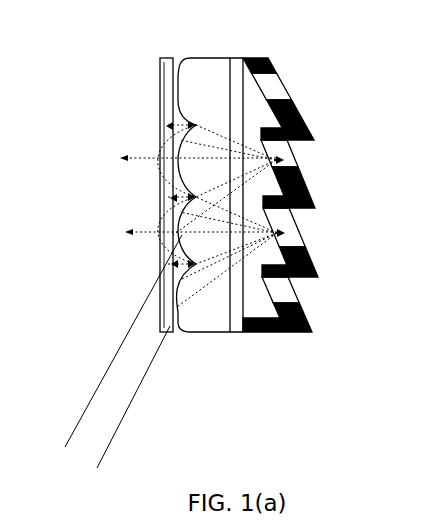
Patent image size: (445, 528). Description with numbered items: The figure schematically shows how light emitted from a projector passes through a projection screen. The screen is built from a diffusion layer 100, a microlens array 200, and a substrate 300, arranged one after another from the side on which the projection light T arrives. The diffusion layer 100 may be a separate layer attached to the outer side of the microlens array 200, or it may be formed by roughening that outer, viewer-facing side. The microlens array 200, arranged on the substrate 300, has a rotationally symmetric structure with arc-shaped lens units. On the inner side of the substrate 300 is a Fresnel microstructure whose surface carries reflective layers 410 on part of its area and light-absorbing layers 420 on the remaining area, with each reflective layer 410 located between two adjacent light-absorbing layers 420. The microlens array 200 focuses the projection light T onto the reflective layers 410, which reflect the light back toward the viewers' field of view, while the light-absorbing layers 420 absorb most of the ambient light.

The diffusion layer 100 is at (156, 67).
The microlens array 200 is at (206, 50).
The substrate 300 is at (237, 342).
The reflective layers 410 is at (292, 86).
The light-absorbing layers 420 is at (320, 318).
The projection light T is at (97, 358).